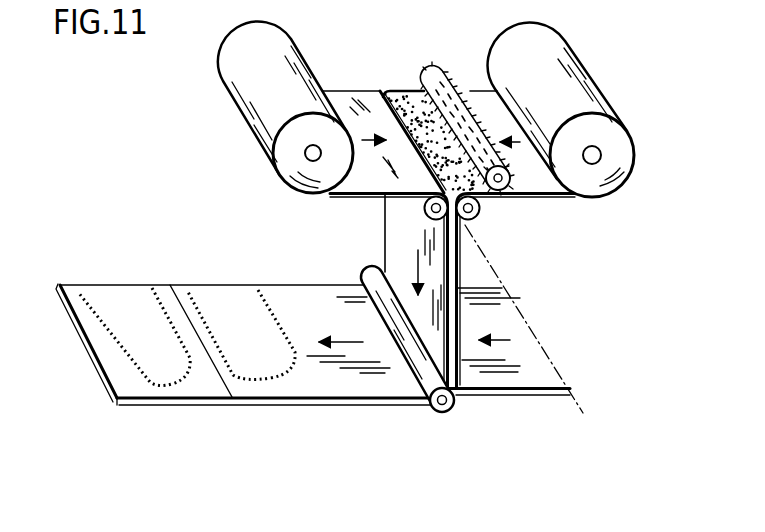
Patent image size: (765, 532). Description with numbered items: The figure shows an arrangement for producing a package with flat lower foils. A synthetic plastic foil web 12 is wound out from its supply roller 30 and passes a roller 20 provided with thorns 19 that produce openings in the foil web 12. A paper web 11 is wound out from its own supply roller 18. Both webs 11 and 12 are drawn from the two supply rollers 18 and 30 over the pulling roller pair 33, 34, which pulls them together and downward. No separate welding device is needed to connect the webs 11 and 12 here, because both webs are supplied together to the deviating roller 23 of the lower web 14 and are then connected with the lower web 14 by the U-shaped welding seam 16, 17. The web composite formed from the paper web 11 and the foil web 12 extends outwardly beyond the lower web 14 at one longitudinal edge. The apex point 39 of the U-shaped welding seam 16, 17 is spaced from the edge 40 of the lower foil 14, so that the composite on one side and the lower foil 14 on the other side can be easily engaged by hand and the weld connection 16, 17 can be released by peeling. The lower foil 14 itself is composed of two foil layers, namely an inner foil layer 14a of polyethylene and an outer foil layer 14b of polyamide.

The paper web 11 is at (354, 98).
The synthetic plastic foil web 12 is at (479, 91).
The lower web 14 is at (536, 346).
The inner foil layer 14a is at (547, 387).
The outer foil layer 14b is at (547, 397).
The U-shaped welding seam 16 is at (168, 311).
The U-shaped welding seam 17 is at (300, 318).
The supply roller 18 is at (288, 170).
The thorns 19 is at (433, 66).
The roller 20 is at (505, 190).
The deviating roller 23 is at (442, 414).
The supply roller 30 is at (605, 133).
The pulling roller 33 is at (473, 218).
The pulling roller 34 is at (426, 219).
The apex point 39 is at (168, 382).
The edge 40 is at (100, 388).